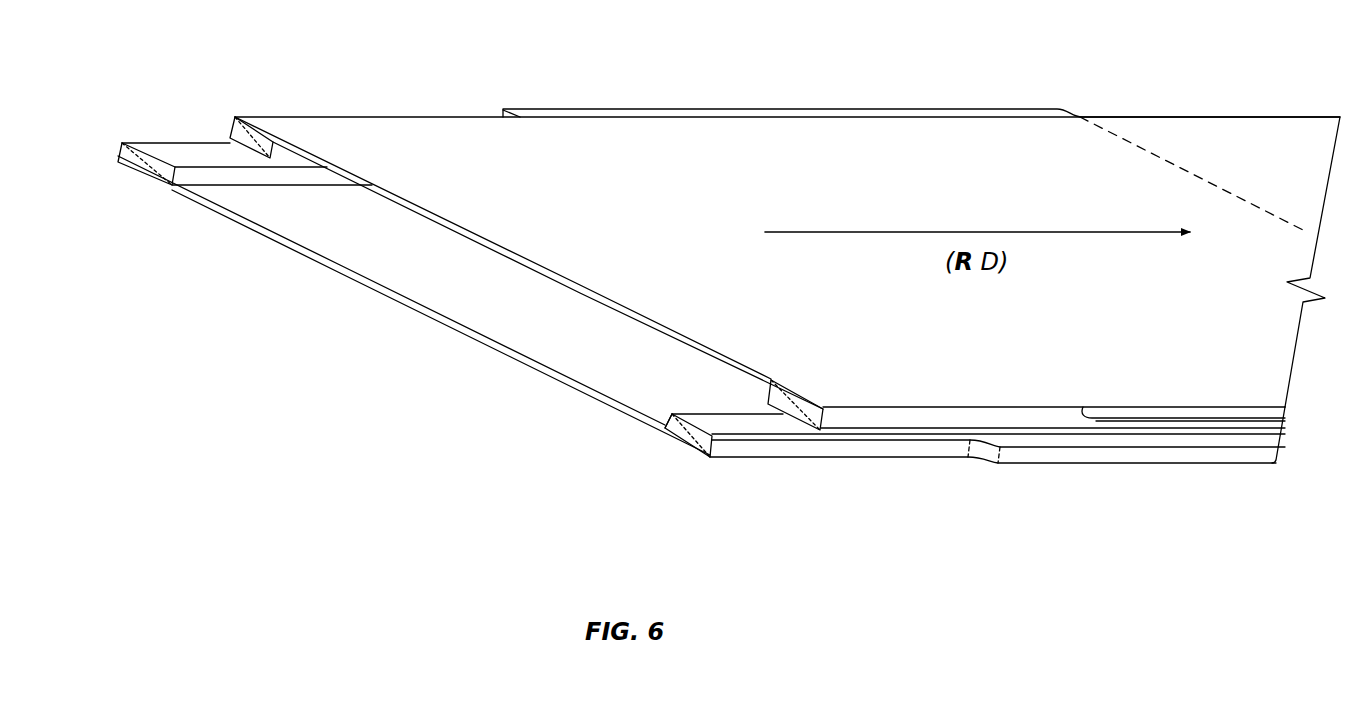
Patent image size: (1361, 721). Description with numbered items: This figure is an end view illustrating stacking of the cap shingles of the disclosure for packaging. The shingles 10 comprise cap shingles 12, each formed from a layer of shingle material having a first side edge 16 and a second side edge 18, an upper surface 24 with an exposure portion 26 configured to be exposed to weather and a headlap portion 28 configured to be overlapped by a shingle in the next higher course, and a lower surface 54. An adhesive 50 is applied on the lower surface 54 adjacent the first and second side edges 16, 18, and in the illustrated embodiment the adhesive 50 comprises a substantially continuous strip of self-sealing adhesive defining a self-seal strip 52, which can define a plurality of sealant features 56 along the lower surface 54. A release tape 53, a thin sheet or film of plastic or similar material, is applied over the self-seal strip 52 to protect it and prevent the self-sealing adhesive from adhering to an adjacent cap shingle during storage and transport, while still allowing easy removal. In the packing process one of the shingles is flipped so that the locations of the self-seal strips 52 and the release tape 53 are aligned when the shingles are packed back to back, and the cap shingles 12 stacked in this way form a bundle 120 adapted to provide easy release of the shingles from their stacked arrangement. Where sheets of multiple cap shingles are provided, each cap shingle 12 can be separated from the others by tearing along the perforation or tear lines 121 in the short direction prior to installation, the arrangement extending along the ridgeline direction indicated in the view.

The shingles 10 is at (776, 104).
The cap shingle 12 is at (400, 135).
The first side edge 16 is at (835, 108).
The second side edge 18 is at (1052, 465).
The upper surface 24 is at (846, 306).
The exposure portion 26 is at (890, 127).
The headlap portion 28 is at (568, 233).
The adhesive 50 is at (270, 126).
The self-seal strip 52 is at (254, 119).
The release tape 53 is at (236, 138).
The lower surface 54 is at (582, 341).
The sealant features 56 is at (720, 442).
The bundle 120 is at (1020, 500).
The perforation or tear lines 121 is at (1139, 146).